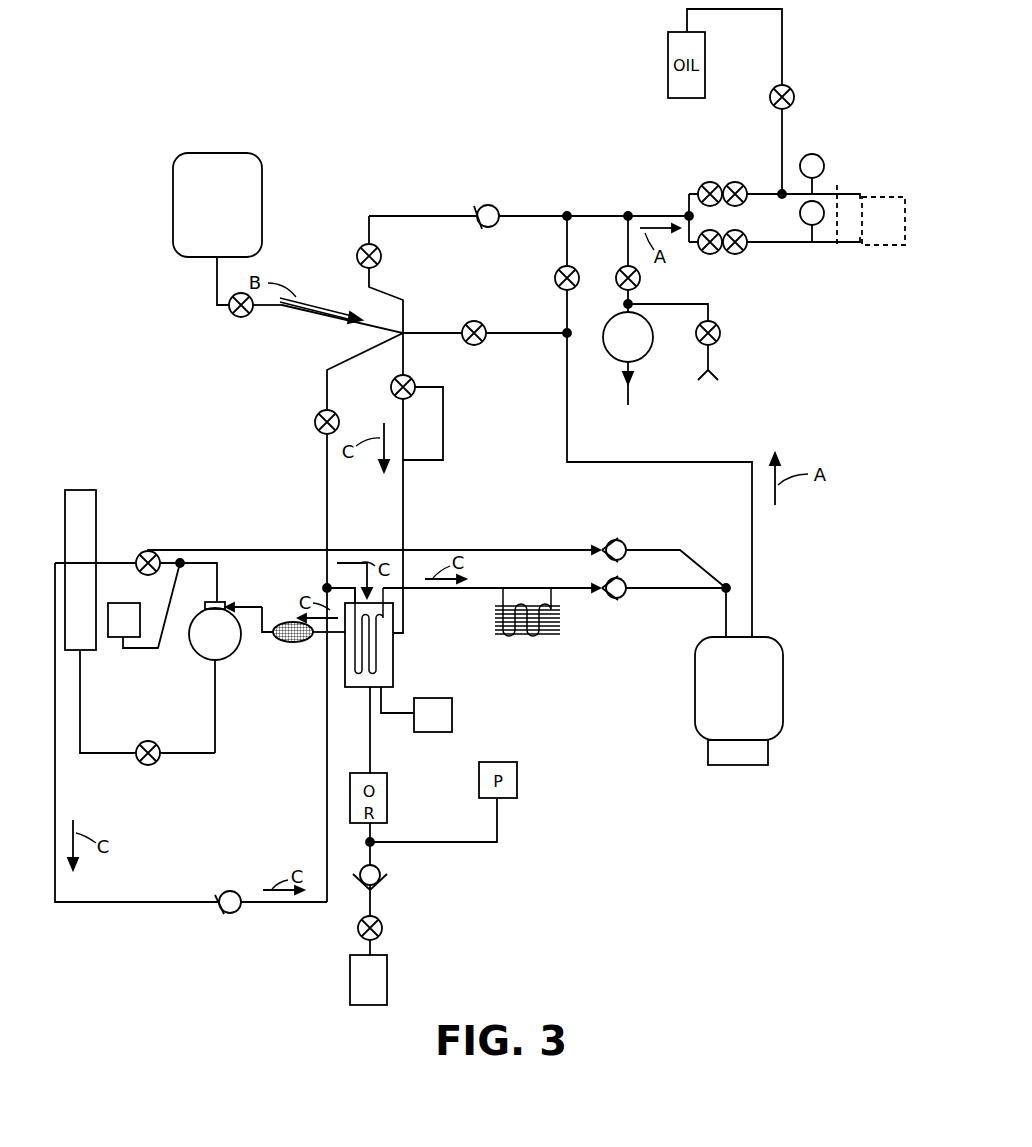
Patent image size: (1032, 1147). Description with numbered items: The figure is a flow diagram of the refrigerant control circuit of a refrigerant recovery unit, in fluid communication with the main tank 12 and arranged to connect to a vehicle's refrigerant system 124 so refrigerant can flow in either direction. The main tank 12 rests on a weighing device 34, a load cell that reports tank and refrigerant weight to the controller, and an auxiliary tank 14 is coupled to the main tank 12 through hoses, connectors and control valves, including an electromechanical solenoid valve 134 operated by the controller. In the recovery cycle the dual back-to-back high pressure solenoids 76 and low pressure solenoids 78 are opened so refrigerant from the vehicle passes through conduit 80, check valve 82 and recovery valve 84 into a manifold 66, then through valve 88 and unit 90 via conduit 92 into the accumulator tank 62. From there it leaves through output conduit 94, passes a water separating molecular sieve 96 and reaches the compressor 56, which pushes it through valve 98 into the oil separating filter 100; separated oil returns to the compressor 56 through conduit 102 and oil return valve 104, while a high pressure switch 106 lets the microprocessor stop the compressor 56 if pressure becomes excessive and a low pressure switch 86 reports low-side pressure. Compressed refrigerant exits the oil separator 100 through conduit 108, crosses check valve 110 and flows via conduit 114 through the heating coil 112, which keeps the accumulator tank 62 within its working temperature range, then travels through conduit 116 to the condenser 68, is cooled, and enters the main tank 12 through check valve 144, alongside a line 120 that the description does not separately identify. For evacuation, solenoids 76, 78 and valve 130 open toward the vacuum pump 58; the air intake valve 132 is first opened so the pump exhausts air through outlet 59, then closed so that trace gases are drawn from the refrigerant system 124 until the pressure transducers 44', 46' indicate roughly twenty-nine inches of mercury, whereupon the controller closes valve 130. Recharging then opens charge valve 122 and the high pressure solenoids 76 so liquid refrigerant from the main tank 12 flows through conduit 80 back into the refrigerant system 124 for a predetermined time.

The main tank 12 is at (783, 712).
The tank 14 is at (205, 151).
The weighing device 34 is at (768, 753).
The electrical pressure transducer 44' is at (846, 155).
The electrical pressure transducer 46' is at (786, 221).
The compressor 56 is at (236, 650).
The vacuum pump 58 is at (650, 358).
The outlet 59 is at (635, 397).
The accumulator tank 62 is at (394, 648).
The manifold 66 is at (408, 332).
The condenser 68 is at (527, 640).
The high pressure solenoids 76 is at (735, 180).
The low pressure solenoids 78 is at (735, 256).
The conduit 80 is at (600, 214).
The check valve 82 is at (488, 205).
The recovery valve 84 is at (357, 252).
The low pressure switch 86 is at (452, 705).
The valve 88 is at (391, 384).
The unit 90 is at (448, 430).
The conduit 92 is at (407, 500).
The output conduit 94 is at (318, 644).
The water separating molecular sieve 96 is at (293, 621).
The valve 98 is at (146, 551).
The oil separating filter 100 is at (84, 490).
The conduit 102 is at (85, 686).
The oil return valve 104 is at (148, 765).
The high pressure switch 106 is at (117, 603).
The conduit 108 is at (54, 823).
The check valve 110 is at (225, 890).
The heating coil 112 is at (359, 678).
The conduit 114 is at (333, 583).
The conduit 116 is at (440, 597).
The return line 120 is at (752, 557).
The charge valve 122 is at (555, 276).
The refrigerant system 124 is at (895, 246).
The valve 130 is at (616, 276).
The air intake valve 132 is at (722, 335).
The electromechanical solenoid valve 134 is at (250, 316).
The check valve 144 is at (613, 602).